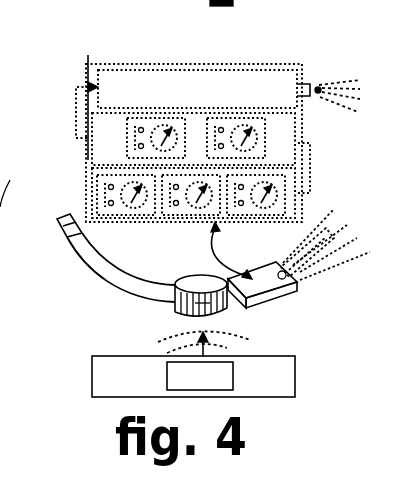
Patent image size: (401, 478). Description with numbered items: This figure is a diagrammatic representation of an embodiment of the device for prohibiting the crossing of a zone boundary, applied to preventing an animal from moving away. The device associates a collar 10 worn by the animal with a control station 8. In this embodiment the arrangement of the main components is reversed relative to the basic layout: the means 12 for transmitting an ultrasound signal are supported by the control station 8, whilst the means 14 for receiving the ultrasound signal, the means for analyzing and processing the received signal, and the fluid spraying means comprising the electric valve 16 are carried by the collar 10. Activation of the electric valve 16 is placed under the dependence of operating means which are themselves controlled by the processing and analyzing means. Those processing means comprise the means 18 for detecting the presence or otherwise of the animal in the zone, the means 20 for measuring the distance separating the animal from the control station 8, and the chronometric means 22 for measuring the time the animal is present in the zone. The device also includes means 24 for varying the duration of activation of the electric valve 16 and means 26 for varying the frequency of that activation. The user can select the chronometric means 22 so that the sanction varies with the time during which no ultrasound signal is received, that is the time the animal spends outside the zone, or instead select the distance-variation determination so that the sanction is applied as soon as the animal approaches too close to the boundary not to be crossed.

The control station 8 is at (88, 55).
The collar 10 is at (97, 276).
The means for transmitting an ultrasound signal 12 is at (237, 378).
The means for receiving the ultrasound signal 14 is at (175, 313).
The electric valve 16 is at (283, 70).
The means for detecting the presence of the animal in the zone 18 is at (92, 174).
The means for measuring the distance 20 is at (210, 222).
The chronometric means 22 is at (295, 179).
The means for varying the duration of activation of the electric valve 24 is at (127, 145).
The means for varying the frequency of activation of the electric valve 26 is at (265, 131).